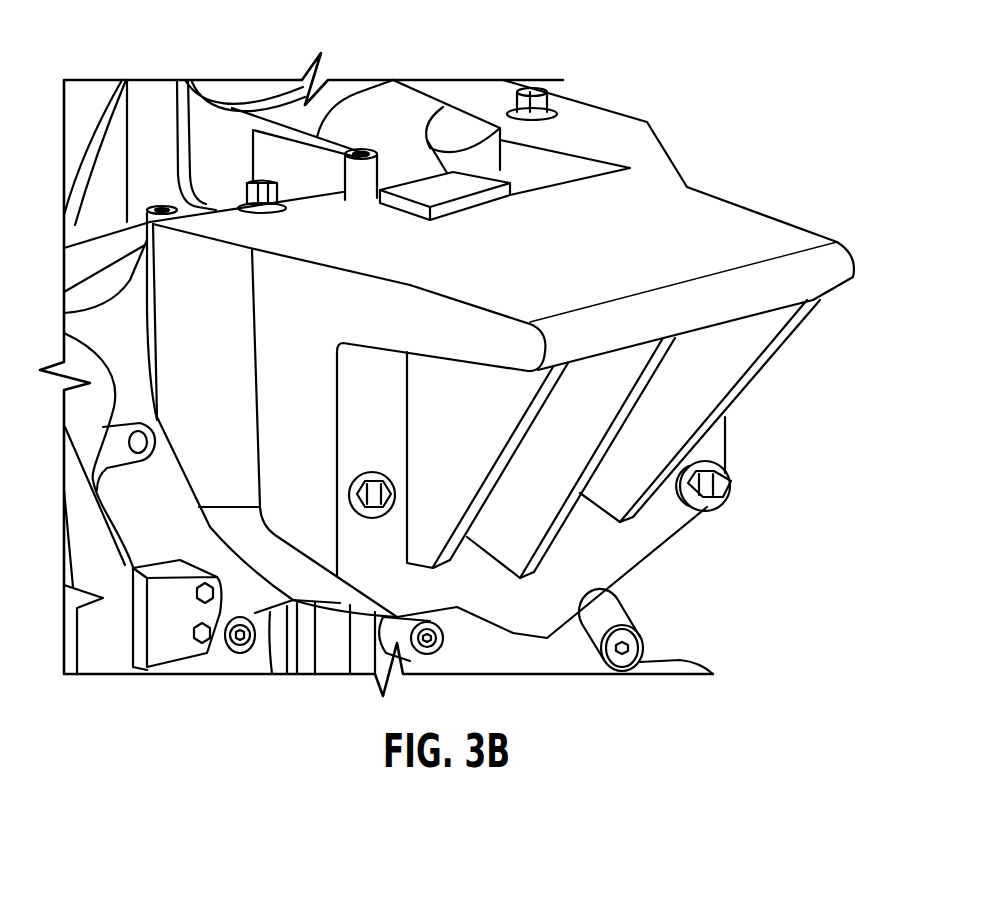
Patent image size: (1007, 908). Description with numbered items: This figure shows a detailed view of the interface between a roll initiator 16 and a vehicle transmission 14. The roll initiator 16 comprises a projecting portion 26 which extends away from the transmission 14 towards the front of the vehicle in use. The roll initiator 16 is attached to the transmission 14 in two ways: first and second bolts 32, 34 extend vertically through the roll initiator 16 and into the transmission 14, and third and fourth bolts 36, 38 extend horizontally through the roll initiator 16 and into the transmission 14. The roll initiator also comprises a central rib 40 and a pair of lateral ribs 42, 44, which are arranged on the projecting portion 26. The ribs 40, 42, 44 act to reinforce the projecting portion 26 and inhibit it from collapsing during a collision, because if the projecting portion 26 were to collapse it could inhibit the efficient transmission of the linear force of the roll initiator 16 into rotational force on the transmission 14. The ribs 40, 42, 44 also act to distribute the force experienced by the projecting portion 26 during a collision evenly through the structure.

The transmission 14 is at (181, 84).
The roll initiator 16 is at (621, 127).
The projecting portion 26 is at (780, 240).
The first bolt 32 is at (279, 205).
The second bolt 34 is at (552, 97).
The third bolt 36 is at (388, 500).
The fourth bolt 38 is at (720, 485).
The central rib 40 is at (530, 460).
The lateral rib 42 is at (430, 410).
The lateral rib 44 is at (773, 362).